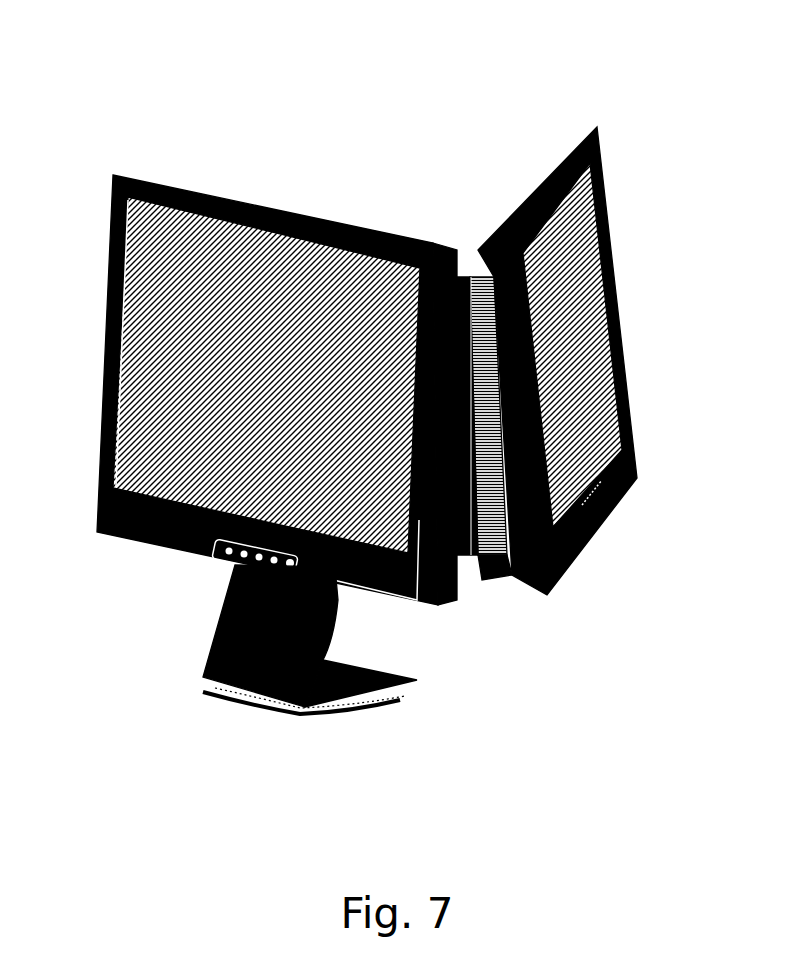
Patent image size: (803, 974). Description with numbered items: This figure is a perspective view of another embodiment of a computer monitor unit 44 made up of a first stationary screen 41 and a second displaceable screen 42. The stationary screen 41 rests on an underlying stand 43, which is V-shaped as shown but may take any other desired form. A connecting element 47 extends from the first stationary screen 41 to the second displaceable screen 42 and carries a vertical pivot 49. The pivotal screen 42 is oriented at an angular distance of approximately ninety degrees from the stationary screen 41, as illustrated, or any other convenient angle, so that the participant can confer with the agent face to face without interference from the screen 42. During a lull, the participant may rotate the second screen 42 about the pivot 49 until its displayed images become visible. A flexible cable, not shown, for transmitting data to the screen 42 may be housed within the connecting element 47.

The first stationary screen 41 is at (150, 358).
The second displaceable screen 42 is at (612, 362).
The stand 43 is at (215, 640).
The monitor unit 44 is at (371, 362).
The connecting element 47 is at (462, 560).
The vertical pivot 49 is at (470, 277).